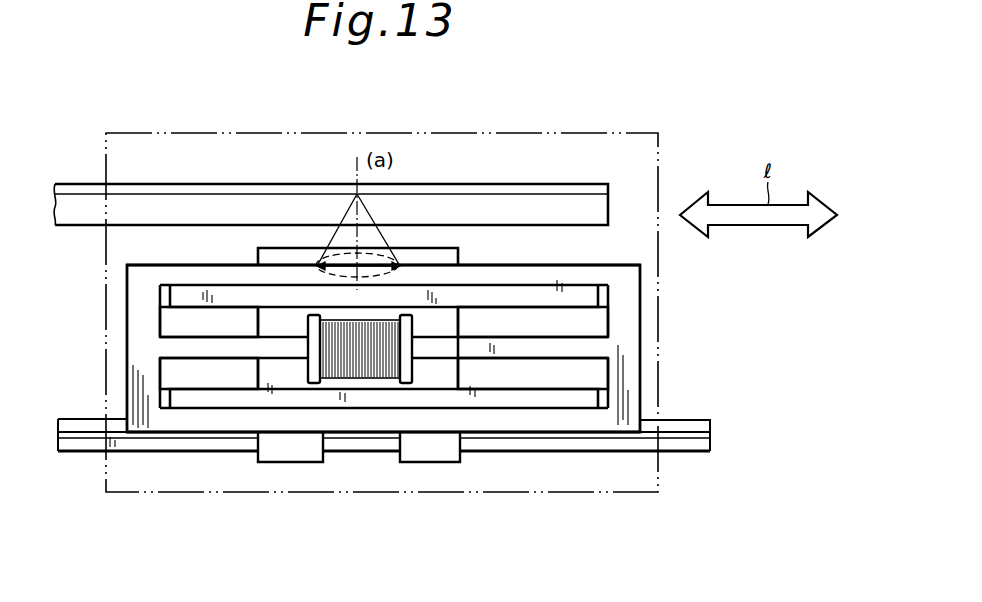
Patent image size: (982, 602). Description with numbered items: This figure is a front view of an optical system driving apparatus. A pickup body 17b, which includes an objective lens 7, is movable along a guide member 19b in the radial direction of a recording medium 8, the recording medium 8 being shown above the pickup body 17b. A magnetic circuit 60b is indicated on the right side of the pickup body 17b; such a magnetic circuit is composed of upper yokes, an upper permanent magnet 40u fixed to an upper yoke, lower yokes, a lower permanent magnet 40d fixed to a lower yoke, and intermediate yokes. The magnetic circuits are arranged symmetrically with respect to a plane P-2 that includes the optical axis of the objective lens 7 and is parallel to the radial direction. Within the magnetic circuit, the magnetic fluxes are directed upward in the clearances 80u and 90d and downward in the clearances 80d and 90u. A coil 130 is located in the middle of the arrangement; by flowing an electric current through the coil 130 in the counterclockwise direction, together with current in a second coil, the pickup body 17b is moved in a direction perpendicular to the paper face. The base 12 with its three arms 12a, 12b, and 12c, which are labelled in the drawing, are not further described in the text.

The recording medium 8 is at (265, 186).
The objective lens 7 is at (387, 248).
The pickup body 17b is at (435, 262).
The base 12 is at (370, 338).
The upper arm of base 12a is at (181, 278).
The lower arm of base 12b is at (183, 422).
The middle arm of base 12c is at (185, 348).
The upper permanent magnet 40u is at (588, 300).
The lower permanent magnet 40d is at (588, 403).
The clearance 90u is at (590, 328).
The clearance 90d is at (590, 375).
The clearance 80u is at (232, 320).
The clearance 80d is at (232, 378).
The coil 130 is at (363, 384).
The guide member 19b is at (700, 444).
The magnetic circuit 60b is at (600, 257).
The plane P-2 is at (567, 478).